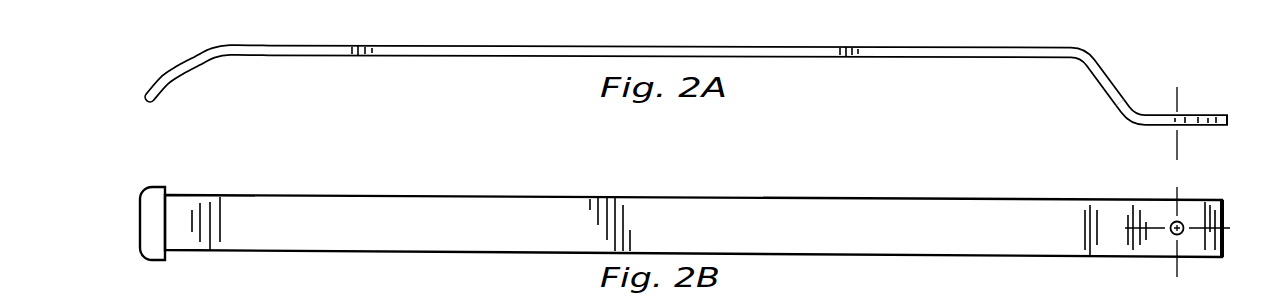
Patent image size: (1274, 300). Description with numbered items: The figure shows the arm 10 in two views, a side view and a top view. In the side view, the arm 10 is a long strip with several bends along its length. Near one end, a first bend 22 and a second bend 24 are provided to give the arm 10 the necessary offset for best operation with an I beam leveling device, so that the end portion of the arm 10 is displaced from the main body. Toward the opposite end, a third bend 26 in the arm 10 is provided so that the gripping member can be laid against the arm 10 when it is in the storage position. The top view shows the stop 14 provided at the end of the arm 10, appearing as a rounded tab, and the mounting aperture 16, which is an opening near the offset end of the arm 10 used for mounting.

In FIG. 2A, the arm 10 is at (580, 45).
In FIG. 2B, the arm 10 is at (557, 198).
In FIG. 2A, the stop 14 is at (163, 92).
In FIG. 2B, the stop 14 is at (156, 192).
In FIG. 2B, the mounting aperture 16 is at (1181, 221).
In FIG. 2A, the first bend 22 is at (1142, 114).
In FIG. 2A, the second bend 24 is at (1084, 66).
In FIG. 2A, the third bend 26 is at (214, 65).